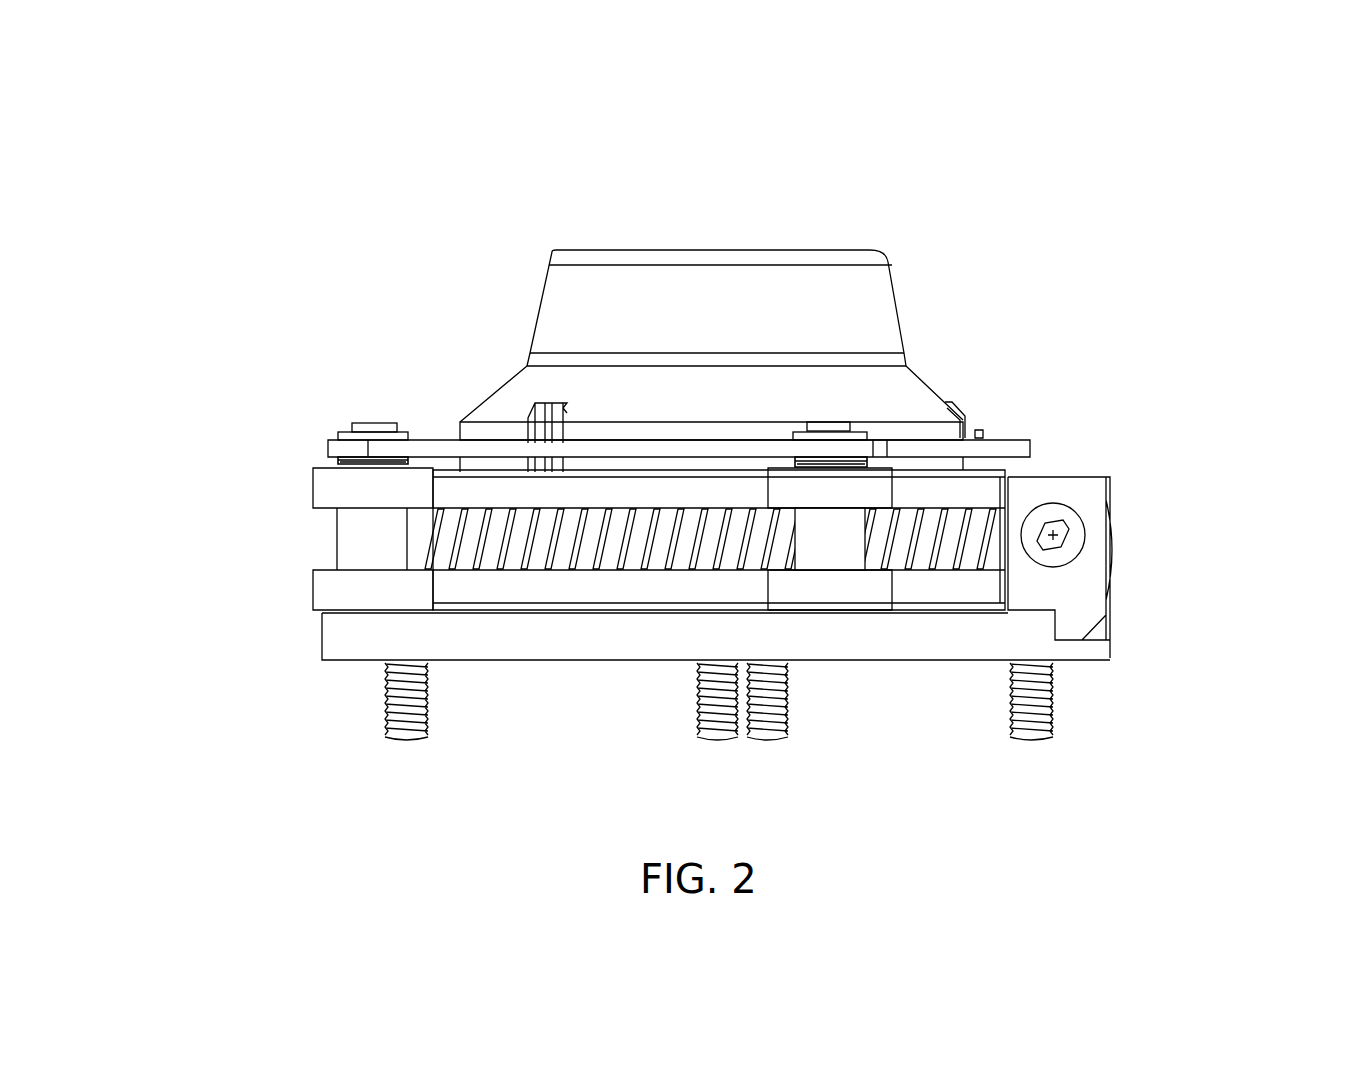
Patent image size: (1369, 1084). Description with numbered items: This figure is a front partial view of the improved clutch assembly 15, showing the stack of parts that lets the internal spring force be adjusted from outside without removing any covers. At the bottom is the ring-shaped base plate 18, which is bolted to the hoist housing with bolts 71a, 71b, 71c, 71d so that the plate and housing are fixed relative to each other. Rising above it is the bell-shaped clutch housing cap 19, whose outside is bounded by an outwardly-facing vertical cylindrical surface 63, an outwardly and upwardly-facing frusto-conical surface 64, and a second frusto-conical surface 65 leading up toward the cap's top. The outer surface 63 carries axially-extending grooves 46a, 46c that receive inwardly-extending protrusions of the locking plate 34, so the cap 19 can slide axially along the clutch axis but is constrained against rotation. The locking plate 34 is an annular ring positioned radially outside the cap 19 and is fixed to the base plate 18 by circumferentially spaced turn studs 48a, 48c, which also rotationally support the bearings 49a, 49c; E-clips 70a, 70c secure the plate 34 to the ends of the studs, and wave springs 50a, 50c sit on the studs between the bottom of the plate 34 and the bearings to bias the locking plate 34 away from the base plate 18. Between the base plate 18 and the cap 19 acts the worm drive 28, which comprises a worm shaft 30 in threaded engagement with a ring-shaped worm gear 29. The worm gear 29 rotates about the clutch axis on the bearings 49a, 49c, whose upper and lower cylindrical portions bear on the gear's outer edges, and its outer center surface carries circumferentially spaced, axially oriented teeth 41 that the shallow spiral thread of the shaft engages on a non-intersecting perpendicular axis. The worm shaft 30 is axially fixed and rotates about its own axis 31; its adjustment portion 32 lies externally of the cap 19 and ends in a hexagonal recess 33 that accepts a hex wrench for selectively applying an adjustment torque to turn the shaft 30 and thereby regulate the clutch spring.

The clutch assembly 15 is at (767, 147).
The base plate 18 is at (342, 645).
The clutch housing cap 19 is at (716, 341).
The worm drive 28 is at (1174, 592).
The worm gear 29 is at (483, 587).
The worm shaft 30 is at (1120, 535).
The axis 31 is at (1103, 592).
The adjustment portion 32 is at (1075, 565).
The recess 33 is at (1045, 560).
The locking plate 34 is at (1038, 440).
The teeth 41 is at (522, 567).
The groove 46a is at (545, 403).
The groove 46c is at (960, 403).
The turn stud 48a is at (372, 423).
The turn stud 48c is at (830, 420).
The bearing 49a is at (313, 490).
The bearing 49c is at (848, 498).
The wave spring 50a is at (333, 462).
The wave spring 50c is at (783, 460).
The outwardly-facing vertical cylindrical surface 63 is at (460, 432).
The outwardly and upwardly-facing frusto-conical surface 64 is at (485, 397).
The second frusto-conical surface 65 is at (538, 297).
The E-clip 70a is at (337, 436).
The E-clip 70c is at (868, 432).
The bolt 71a is at (420, 742).
The bolt 71b is at (712, 742).
The bolt 71c is at (773, 742).
The bolt 71d is at (1032, 742).